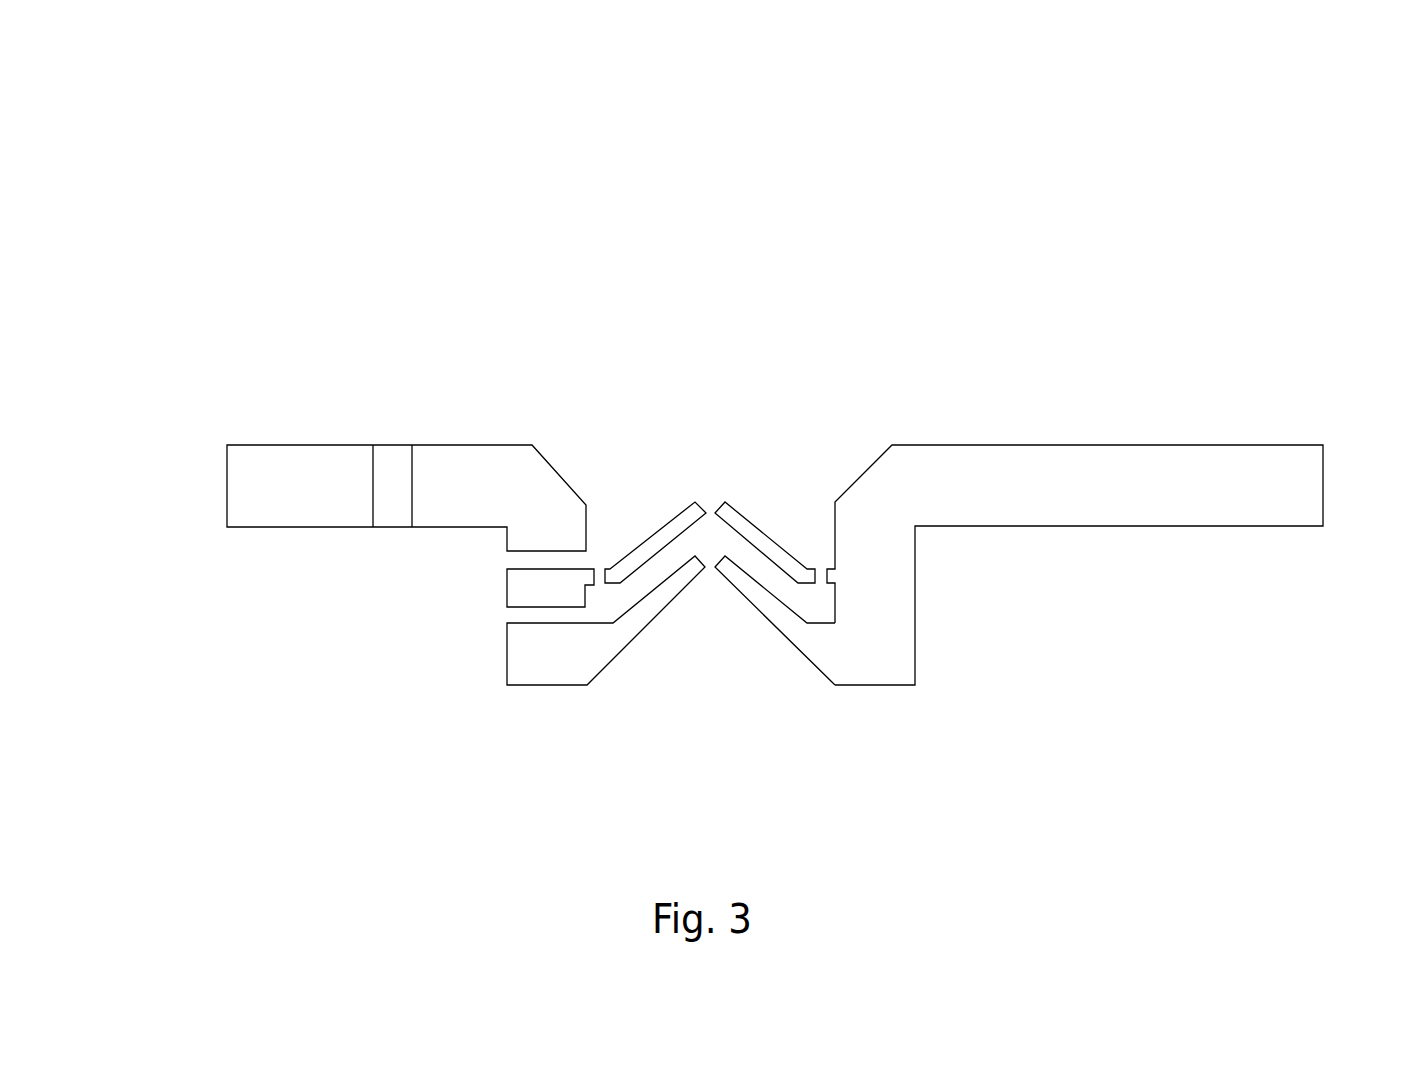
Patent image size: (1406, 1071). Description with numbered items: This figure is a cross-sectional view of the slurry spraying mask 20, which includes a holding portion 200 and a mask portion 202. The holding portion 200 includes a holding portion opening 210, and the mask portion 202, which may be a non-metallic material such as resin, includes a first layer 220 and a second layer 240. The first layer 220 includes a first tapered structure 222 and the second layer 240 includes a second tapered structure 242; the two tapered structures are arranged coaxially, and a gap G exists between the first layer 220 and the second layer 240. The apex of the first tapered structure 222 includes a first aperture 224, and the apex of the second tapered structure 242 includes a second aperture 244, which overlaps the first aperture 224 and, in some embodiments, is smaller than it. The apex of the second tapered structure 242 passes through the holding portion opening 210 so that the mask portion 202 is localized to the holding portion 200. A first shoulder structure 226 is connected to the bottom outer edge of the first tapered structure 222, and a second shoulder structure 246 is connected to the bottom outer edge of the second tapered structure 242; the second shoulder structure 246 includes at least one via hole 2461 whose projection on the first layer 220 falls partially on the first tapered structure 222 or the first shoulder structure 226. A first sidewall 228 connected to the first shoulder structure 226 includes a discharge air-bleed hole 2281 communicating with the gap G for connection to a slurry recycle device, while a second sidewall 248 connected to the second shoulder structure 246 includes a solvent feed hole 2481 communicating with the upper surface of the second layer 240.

The slurry spraying mask 20 is at (98, 63).
The holding portion 200 is at (1093, 472).
The mask portion 202 is at (1270, 87).
The holding portion opening 210 is at (770, 425).
The first layer 220 is at (1340, 32).
The first tapered structure 222 is at (782, 613).
The first aperture 224 is at (712, 595).
The first shoulder structure 226 is at (600, 638).
The first sidewall 228 is at (522, 587).
The discharge air-bleed hole 2281 is at (489, 616).
The second layer 240 is at (1340, 185).
The second tapered structure 242 is at (755, 535).
The second aperture 244 is at (709, 485).
The second shoulder structure 246 is at (612, 575).
The via hole 2461 is at (601, 548).
The second sidewall 248 is at (528, 536).
The solvent feed hole 2481 is at (489, 560).
The gap G is at (787, 589).